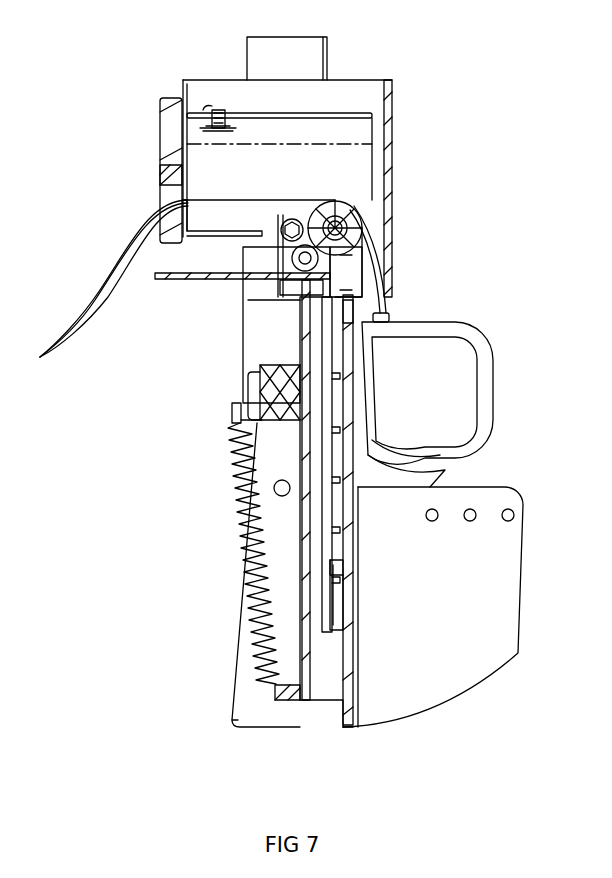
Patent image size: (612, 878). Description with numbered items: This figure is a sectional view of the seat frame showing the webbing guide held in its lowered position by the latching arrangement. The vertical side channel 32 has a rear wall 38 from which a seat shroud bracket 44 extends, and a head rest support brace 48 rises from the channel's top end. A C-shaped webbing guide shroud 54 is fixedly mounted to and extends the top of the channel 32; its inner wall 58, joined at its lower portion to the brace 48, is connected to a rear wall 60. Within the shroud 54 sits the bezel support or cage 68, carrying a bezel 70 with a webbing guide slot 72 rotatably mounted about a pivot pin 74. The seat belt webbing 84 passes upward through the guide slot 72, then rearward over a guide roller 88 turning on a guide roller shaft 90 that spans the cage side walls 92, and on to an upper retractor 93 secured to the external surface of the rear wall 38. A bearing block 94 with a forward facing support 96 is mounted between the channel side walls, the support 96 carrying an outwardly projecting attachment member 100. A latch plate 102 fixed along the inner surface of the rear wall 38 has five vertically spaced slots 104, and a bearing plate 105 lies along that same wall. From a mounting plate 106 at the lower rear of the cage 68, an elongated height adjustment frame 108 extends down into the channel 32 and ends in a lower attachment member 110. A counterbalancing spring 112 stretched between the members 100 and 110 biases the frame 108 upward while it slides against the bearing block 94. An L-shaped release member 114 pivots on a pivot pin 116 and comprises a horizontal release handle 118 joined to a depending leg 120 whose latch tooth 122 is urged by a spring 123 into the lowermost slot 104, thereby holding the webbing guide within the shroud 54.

The side channel 32 is at (212, 708).
The rear wall 38 is at (353, 657).
The seat shroud bracket 44 is at (500, 640).
The head rest support brace 48 is at (298, 48).
The webbing guide shroud 54 is at (422, 131).
The inner wall 58 is at (240, 95).
The rear wall 60 is at (392, 172).
The bezel support or cage 68 is at (345, 113).
The bezel 70 is at (172, 100).
The webbing guide slot 72 is at (163, 205).
The pivot pin 74 is at (163, 168).
The seat belt webbing 84 is at (122, 210).
The guide roller 88 is at (360, 214).
The guide roller shaft 90 is at (348, 228).
The cage side wall 92 is at (348, 268).
The upper retractor 93 is at (490, 392).
The bearing block 94 is at (240, 420).
The bearing block support 96 is at (258, 386).
The attachment member 100 is at (232, 410).
The latch plate 102 is at (343, 605).
The slots 104 is at (352, 532).
The bearing plate 105 is at (340, 722).
The mounting plate 106 is at (288, 300).
The height adjustment frame 108 is at (302, 455).
The attachment member 110 is at (290, 702).
The counterbalancing spring 112 is at (250, 536).
The release member 114 is at (165, 298).
The pivot pin 116 is at (300, 215).
The release handle 118 is at (220, 280).
The leg 120 is at (358, 308).
The latch tooth 122 is at (345, 580).
The spring 123 is at (290, 257).